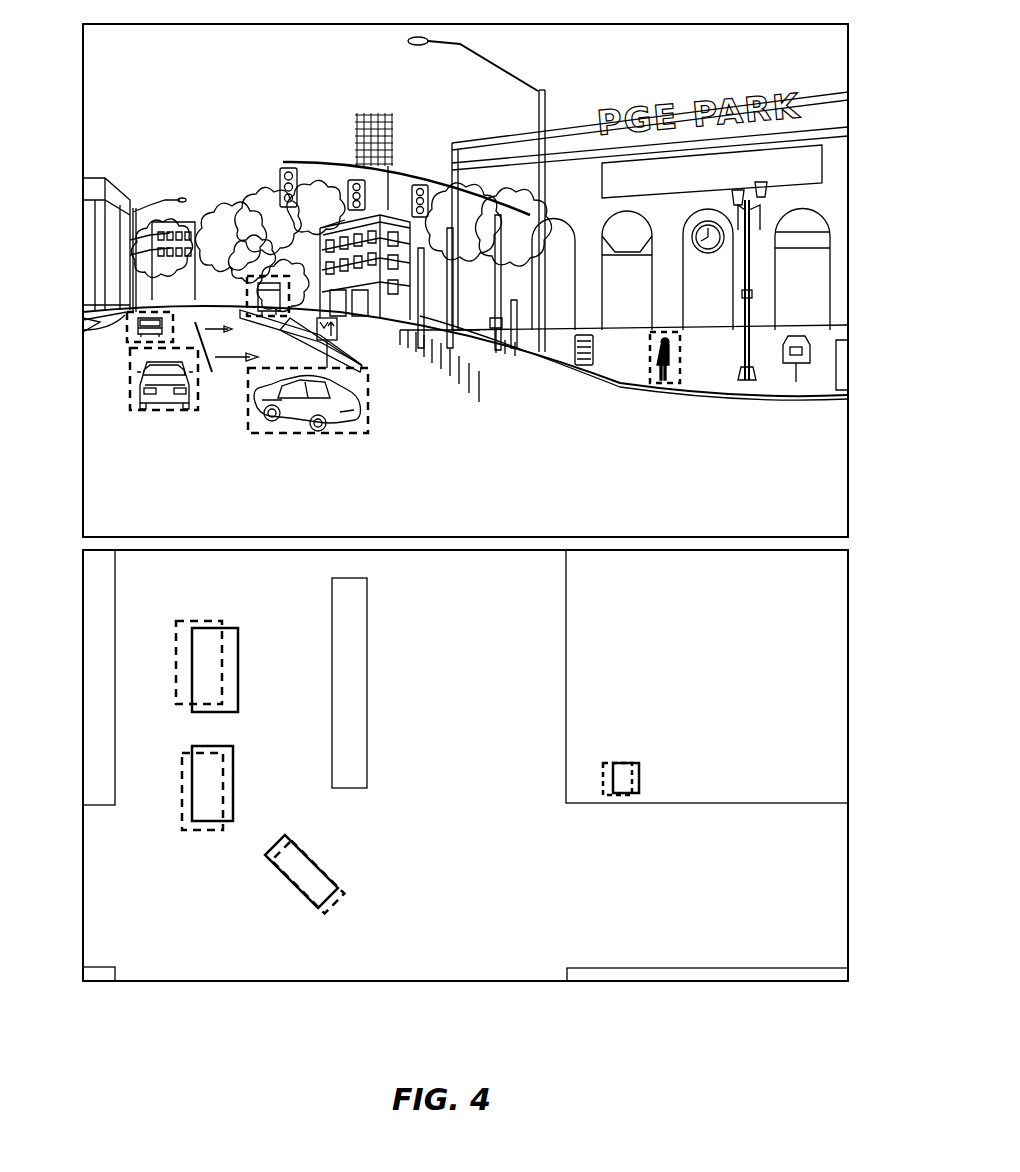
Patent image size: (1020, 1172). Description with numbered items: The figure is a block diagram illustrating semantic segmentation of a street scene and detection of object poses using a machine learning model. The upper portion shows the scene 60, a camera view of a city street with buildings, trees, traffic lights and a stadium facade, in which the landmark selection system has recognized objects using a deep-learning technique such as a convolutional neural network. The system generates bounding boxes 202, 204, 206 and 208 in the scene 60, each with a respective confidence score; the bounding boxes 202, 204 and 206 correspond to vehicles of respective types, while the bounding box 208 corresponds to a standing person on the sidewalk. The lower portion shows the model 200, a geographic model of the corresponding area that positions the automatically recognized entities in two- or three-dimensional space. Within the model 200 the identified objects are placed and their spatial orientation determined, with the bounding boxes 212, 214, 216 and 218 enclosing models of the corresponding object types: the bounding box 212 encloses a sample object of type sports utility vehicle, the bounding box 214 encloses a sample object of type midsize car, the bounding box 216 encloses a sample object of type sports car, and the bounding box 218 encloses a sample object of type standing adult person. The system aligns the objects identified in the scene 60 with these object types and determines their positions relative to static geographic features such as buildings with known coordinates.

The scene 60 is at (848, 253).
The model 200 is at (848, 712).
The bounding box 202 is at (125, 327).
The bounding box 204 is at (160, 412).
The bounding box 206 is at (282, 435).
The bounding box 208 is at (660, 385).
The bounding box 212 is at (240, 665).
The bounding box 214 is at (234, 775).
The bounding box 216 is at (289, 840).
The bounding box 218 is at (635, 762).